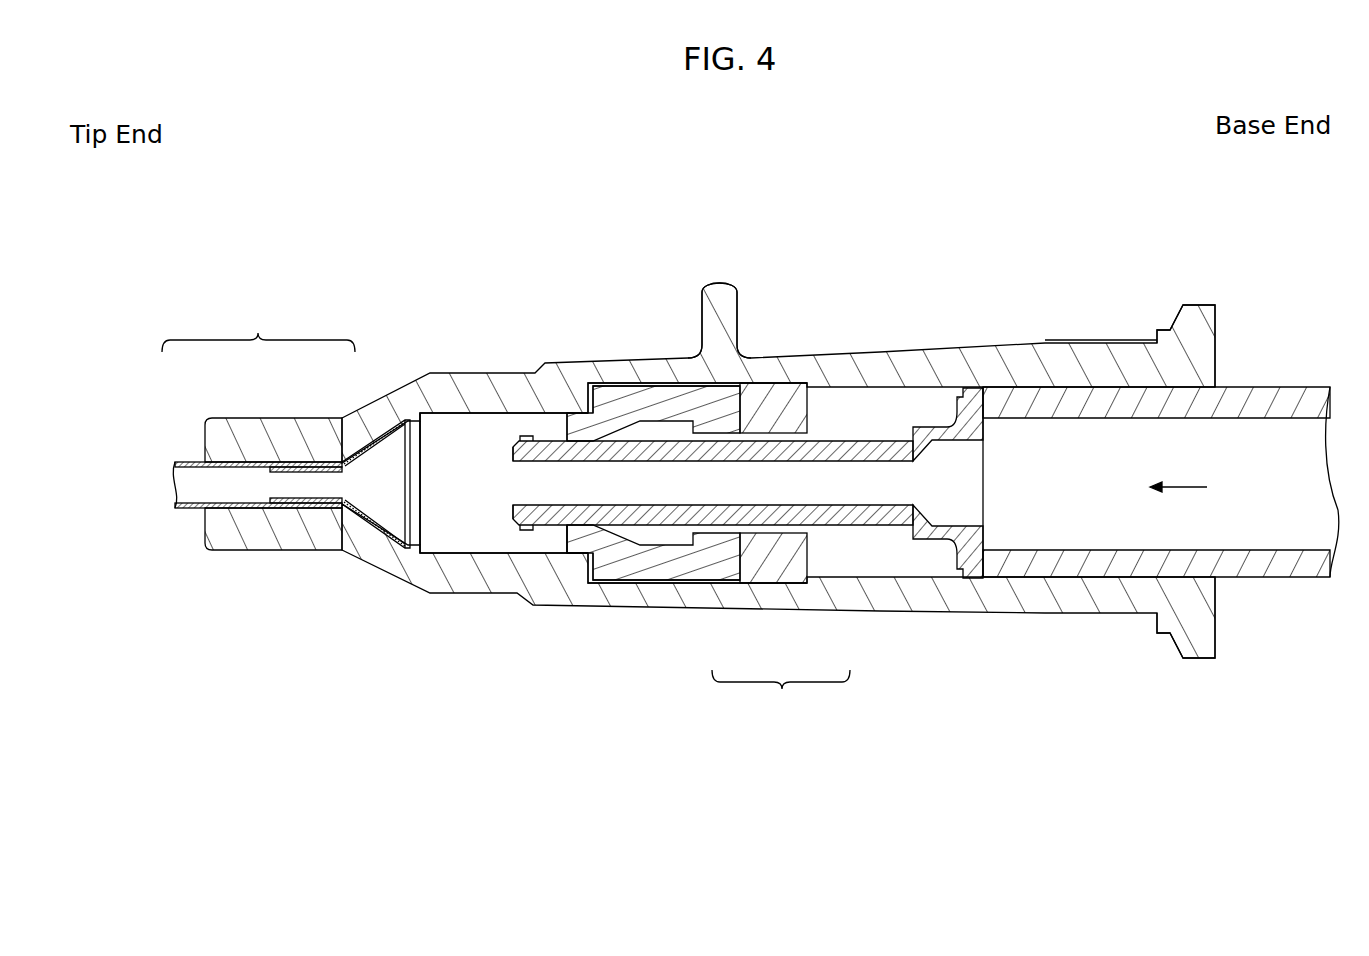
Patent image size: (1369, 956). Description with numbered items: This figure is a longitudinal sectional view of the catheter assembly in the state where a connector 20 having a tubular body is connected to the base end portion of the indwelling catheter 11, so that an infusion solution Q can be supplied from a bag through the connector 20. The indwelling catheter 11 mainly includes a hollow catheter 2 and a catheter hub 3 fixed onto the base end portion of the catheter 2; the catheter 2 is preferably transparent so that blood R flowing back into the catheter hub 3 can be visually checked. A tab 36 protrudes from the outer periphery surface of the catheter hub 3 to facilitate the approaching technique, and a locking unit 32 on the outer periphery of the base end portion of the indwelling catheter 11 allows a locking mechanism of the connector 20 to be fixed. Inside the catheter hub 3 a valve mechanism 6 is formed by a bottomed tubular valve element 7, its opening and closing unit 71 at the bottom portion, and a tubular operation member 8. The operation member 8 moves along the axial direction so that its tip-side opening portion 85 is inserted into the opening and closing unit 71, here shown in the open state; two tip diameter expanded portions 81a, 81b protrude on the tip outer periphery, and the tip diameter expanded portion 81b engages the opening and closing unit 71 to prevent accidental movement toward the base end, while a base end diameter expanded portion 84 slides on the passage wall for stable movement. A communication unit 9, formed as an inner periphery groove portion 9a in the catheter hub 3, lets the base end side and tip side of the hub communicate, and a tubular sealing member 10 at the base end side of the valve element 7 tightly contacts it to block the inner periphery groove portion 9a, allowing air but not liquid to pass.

The catheter 2 is at (192, 458).
The catheter hub 3 is at (330, 418).
The indwelling catheter 11 is at (258, 325).
The communication unit 9 is at (616, 402).
The inner periphery groove portion 9a is at (504, 483).
The tab 36 is at (727, 282).
The sealing member 10 is at (770, 393).
The valve element 7 is at (710, 572).
The opening and closing unit 71 is at (566, 550).
The operation member 8 is at (833, 527).
The tip diameter expanded portion 81a is at (530, 436).
The tip diameter expanded portion 81b is at (566, 440).
The base end diameter expanded portion 84 is at (966, 405).
The opening portion 85 is at (513, 506).
The valve mechanism 6 is at (781, 697).
The locking unit 32 is at (1193, 310).
The connector 20 is at (1270, 395).
The blood R is at (437, 520).
The infusion solution Q is at (1194, 490).